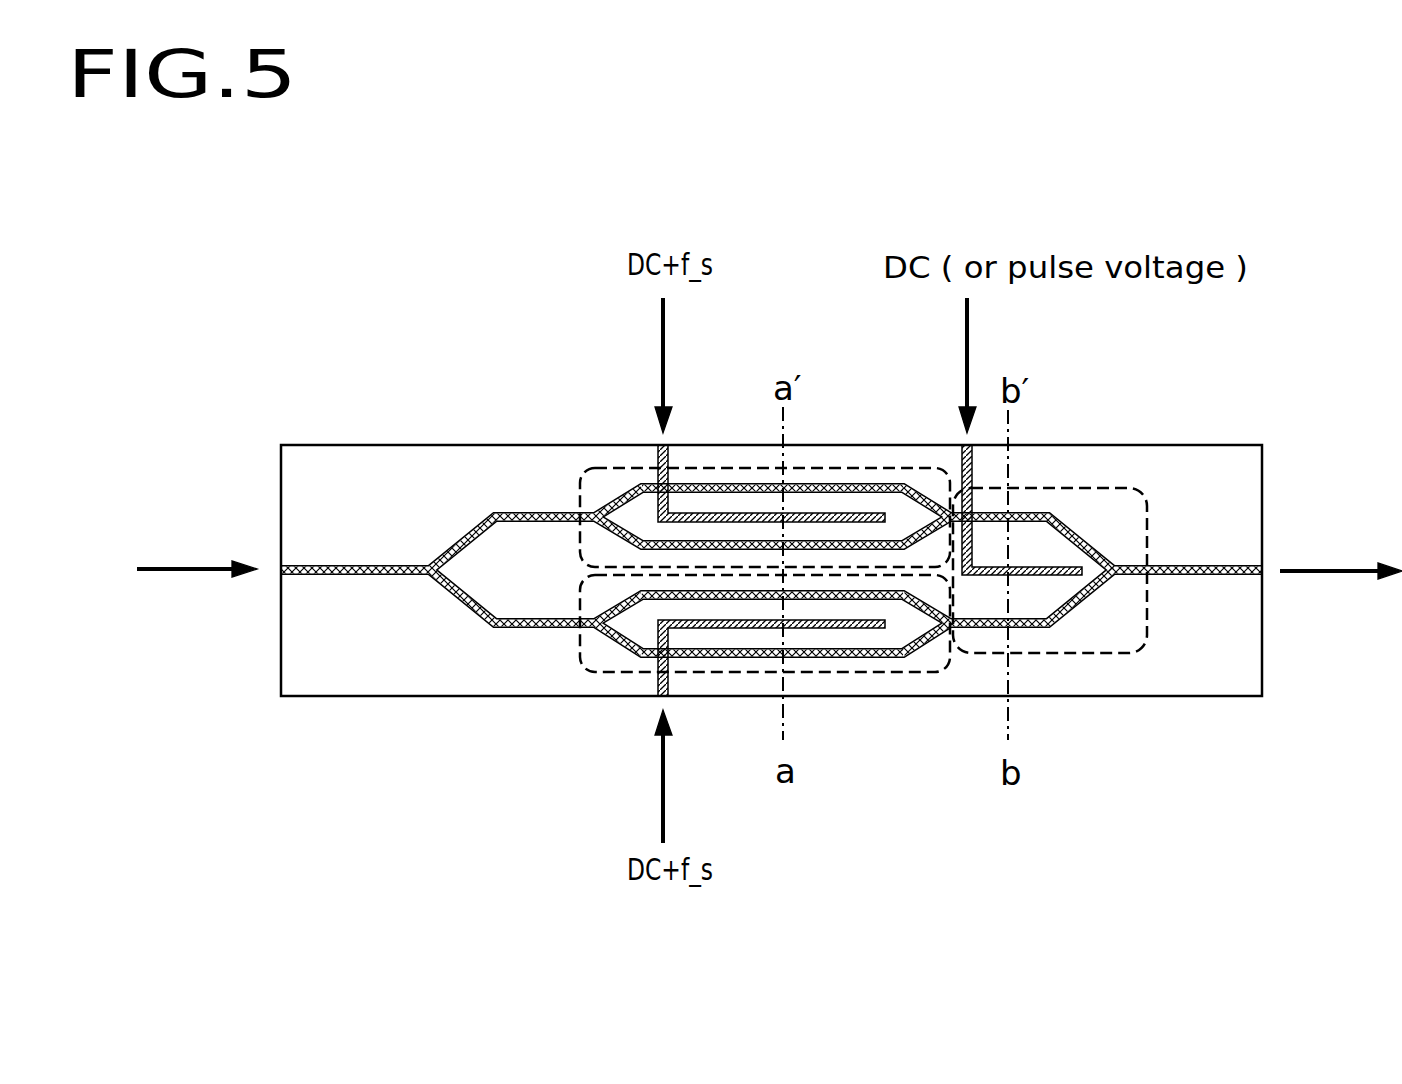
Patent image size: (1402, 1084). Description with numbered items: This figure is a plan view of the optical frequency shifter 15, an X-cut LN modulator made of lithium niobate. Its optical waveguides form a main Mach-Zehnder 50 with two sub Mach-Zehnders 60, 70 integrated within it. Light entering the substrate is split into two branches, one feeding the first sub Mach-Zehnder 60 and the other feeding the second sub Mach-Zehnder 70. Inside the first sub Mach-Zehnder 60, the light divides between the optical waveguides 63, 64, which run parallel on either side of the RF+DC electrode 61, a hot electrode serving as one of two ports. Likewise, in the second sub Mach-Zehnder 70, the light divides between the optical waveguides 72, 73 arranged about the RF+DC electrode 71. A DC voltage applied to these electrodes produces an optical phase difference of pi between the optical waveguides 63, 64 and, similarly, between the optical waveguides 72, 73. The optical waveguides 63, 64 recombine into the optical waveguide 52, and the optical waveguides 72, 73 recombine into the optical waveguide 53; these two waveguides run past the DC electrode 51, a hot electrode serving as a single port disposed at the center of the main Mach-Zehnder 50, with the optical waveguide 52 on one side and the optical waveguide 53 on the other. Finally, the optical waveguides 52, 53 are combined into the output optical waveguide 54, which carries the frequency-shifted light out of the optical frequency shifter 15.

The optical frequency shifter 15 is at (305, 697).
The main Mach-Zehnder 50 is at (1095, 488).
The DC electrode 51 is at (1053, 573).
The optical waveguide 52 is at (990, 523).
The optical waveguide 53 is at (1028, 627).
The optical waveguide 54 is at (1213, 568).
The sub Mach-Zehnder 60 is at (903, 470).
The RF+DC electrode 61 is at (670, 458).
The optical waveguide 63 is at (733, 475).
The optical waveguide 64 is at (818, 540).
The sub Mach-Zehnder 70 is at (907, 673).
The RF+DC electrode 71 is at (723, 657).
The optical waveguide 72 is at (863, 598).
The optical waveguide 73 is at (813, 658).